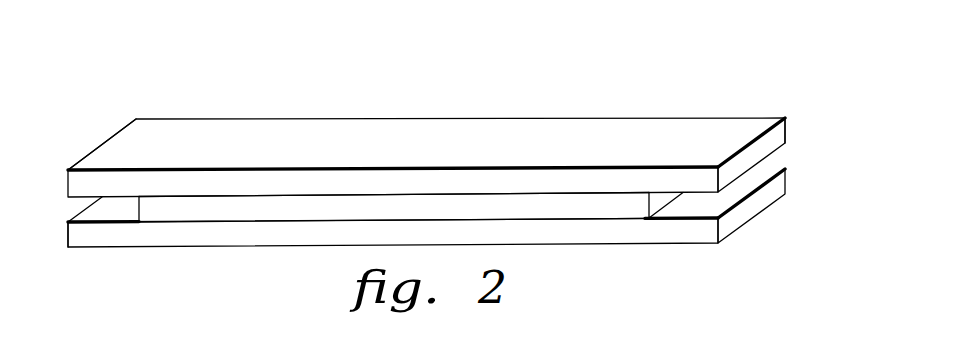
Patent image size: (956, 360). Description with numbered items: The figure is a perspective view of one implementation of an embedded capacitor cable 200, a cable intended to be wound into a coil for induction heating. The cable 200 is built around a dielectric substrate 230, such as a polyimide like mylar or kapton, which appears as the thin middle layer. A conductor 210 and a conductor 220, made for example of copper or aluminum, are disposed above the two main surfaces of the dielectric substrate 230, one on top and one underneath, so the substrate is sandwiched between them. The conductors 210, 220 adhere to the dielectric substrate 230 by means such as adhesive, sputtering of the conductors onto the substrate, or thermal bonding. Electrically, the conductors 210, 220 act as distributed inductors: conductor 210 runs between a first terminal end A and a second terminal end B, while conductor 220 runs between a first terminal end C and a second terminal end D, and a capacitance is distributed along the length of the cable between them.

The embedded capacitor cable 200 is at (246, 88).
The conductor 210 is at (515, 125).
The conductor 220 is at (573, 245).
The dielectric substrate 230 is at (288, 212).
The first terminal end A is at (110, 140).
The second terminal end B is at (780, 135).
The first terminal end C is at (68, 233).
The second terminal end D is at (762, 205).